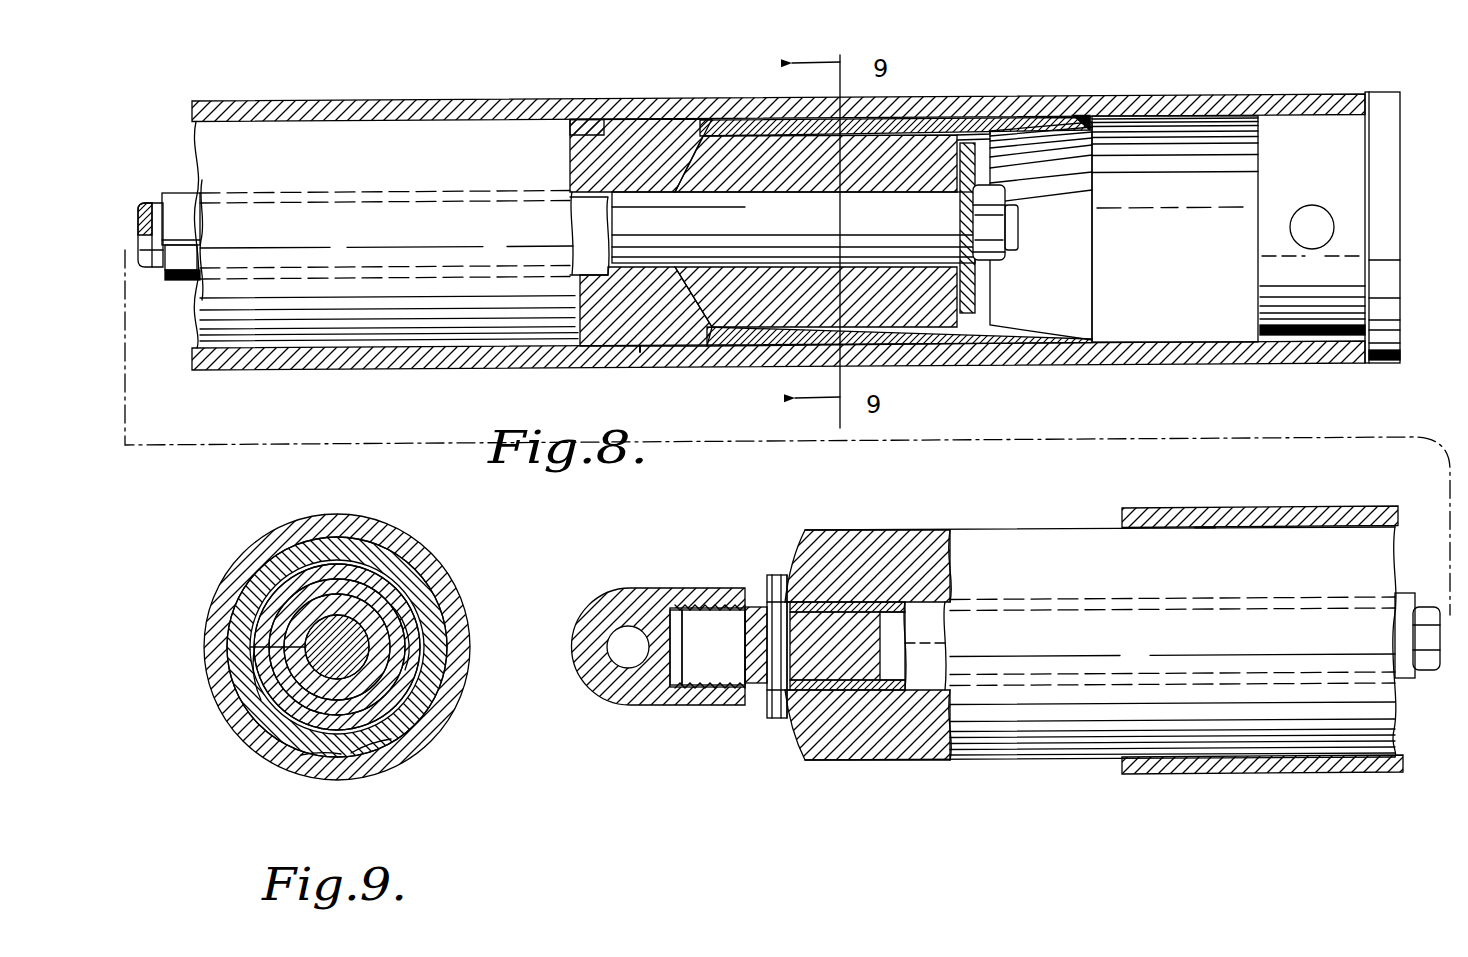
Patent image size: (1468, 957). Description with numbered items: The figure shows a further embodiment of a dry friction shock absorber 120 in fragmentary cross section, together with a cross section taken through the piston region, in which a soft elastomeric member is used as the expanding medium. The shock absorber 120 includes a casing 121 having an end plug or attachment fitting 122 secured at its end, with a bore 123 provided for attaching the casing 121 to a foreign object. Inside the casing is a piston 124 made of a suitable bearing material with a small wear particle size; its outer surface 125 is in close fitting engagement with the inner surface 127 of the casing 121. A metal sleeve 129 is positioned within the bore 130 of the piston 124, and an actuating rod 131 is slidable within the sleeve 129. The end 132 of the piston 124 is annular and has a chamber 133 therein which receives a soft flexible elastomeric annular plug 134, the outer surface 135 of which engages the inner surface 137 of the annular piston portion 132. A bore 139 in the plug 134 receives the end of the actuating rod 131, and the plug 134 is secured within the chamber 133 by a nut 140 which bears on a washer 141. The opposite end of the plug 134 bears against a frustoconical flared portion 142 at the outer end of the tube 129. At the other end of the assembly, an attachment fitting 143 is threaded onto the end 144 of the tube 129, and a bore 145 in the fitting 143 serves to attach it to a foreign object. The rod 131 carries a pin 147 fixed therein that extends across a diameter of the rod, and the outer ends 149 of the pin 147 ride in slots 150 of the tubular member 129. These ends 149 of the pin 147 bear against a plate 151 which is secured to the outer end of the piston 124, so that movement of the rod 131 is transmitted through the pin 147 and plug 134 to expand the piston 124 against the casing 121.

In FIG. 8, the dry friction shock absorber 120 is at (460, 88).
In FIG. 8, the casing 121 is at (1115, 366).
In FIG. 9, the casing 121 is at (452, 583).
In FIG. 8, the end plug or attachment fitting 122 is at (1383, 100).
In FIG. 8, the bore 123 is at (1338, 190).
In FIG. 8, the piston 124 is at (688, 119).
In FIG. 9, the piston 124 is at (268, 562).
In FIG. 8, the outer surface 125 is at (612, 118).
In FIG. 9, the outer surface 125 is at (440, 722).
In FIG. 8, the inner surface 127 is at (640, 352).
In FIG. 9, the inner surface 127 is at (448, 678).
In FIG. 8, the metal sleeve 129 is at (183, 206).
In FIG. 9, the metal sleeve 129 is at (250, 645).
In FIG. 8, the bore 130 is at (562, 206).
In FIG. 8, the actuating rod 131 is at (1022, 222).
In FIG. 9, the actuating rod 131 is at (262, 700).
In FIG. 8, the end of piston 132 is at (990, 120).
In FIG. 9, the end of piston 132 is at (412, 600).
In FIG. 9, the chamber 133 is at (428, 668).
In FIG. 8, the elastomeric annular plug 134 is at (765, 160).
In FIG. 9, the elastomeric annular plug 134 is at (402, 550).
In FIG. 8, the outer surface 135 is at (918, 117).
In FIG. 9, the outer surface 135 is at (305, 770).
In FIG. 8, the inner surface 137 is at (925, 312).
In FIG. 9, the inner surface 137 is at (382, 756).
In FIG. 8, the bore 139 is at (915, 193).
In FIG. 9, the bore 139 is at (342, 615).
In FIG. 8, the nut 140 is at (1012, 256).
In FIG. 8, the washer 141 is at (978, 290).
In FIG. 8, the frustoconical flared portion 142 is at (752, 265).
In FIG. 8, the attachment fitting 143 is at (642, 708).
In FIG. 8, the end of tube 144 is at (656, 602).
In FIG. 8, the bore 145 is at (616, 640).
In FIG. 8, the pin 147 is at (772, 662).
In FIG. 8, the outer ends of pin 149 is at (776, 576).
In FIG. 8, the slots 150 is at (757, 602).
In FIG. 8, the plate 151 is at (786, 576).